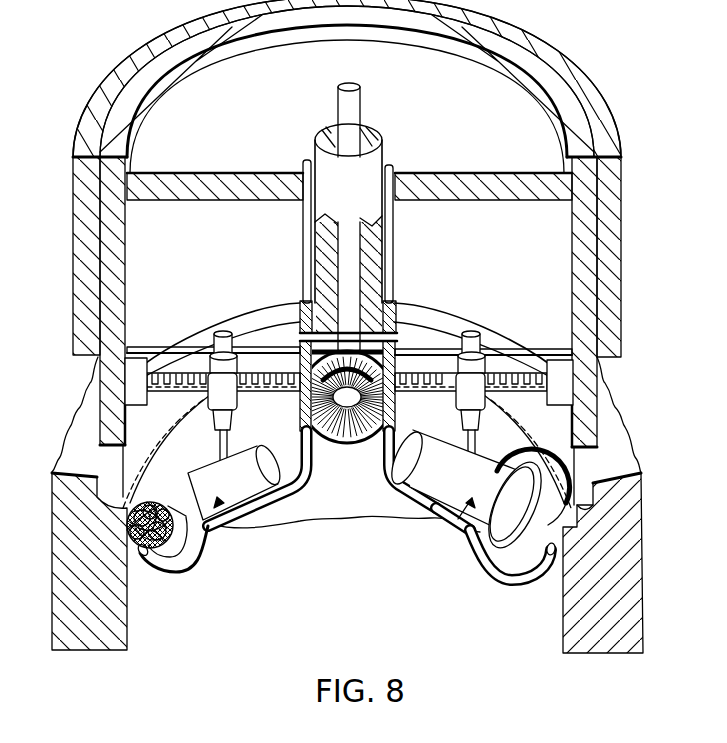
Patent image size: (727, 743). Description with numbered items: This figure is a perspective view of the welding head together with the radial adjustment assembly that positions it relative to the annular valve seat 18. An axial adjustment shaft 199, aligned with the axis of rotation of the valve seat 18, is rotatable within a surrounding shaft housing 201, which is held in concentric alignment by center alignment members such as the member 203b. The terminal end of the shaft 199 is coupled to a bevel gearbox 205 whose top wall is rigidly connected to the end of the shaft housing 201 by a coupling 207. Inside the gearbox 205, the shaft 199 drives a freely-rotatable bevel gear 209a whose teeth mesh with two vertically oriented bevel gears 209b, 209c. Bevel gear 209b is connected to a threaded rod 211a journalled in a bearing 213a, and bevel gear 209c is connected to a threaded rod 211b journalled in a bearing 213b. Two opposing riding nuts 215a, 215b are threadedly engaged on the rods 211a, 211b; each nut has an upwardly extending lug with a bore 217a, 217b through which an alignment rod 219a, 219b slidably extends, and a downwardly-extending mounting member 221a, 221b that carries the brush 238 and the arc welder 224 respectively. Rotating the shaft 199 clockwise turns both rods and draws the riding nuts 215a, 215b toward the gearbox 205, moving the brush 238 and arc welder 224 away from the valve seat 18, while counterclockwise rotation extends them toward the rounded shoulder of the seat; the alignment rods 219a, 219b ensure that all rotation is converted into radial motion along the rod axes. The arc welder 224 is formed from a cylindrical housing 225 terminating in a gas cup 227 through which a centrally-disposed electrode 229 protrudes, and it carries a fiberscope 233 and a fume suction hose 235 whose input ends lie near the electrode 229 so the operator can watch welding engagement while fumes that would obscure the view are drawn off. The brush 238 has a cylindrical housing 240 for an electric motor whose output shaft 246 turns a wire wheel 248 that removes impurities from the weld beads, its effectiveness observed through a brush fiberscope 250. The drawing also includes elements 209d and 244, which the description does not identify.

The annular valve seat 18 is at (604, 506).
The axial adjustment shaft 199 is at (338, 106).
The shaft housing 201 is at (382, 160).
The center alignment member 203b is at (232, 182).
The bevel gearbox 205 is at (390, 300).
The coupling 207 is at (300, 308).
The bevel gear 209a is at (285, 306).
The bevel gear 209b is at (305, 418).
The bevel gear 209c is at (400, 318).
The brush 209d is at (337, 446).
The threaded rod 211a is at (248, 393).
The threaded rod 211b is at (548, 380).
The bearing 213a is at (125, 374).
The bearing 213b is at (573, 394).
The riding nut 215a is at (208, 398).
The riding nut 215b is at (485, 400).
The bore 217a is at (214, 330).
The bore 217b is at (477, 333).
The alignment rod 219a is at (170, 347).
The alignment rod 219b is at (540, 349).
The mounting member 221a is at (217, 425).
The mounting member 221b is at (470, 428).
The arc welder 224 is at (433, 517).
The cylindrical housing 225 is at (462, 508).
The gas cup 227 is at (500, 548).
The electrode 229 is at (560, 533).
The fiberscope 233 is at (598, 472).
The fume suction hose 235 is at (508, 582).
The brush 238 is at (218, 499).
The cylindrical housing 240 is at (240, 497).
The guide posts 244 is at (303, 232).
The output shaft 246 is at (180, 500).
The wire wheel 248 is at (197, 568).
The fiberscope 250 is at (170, 573).